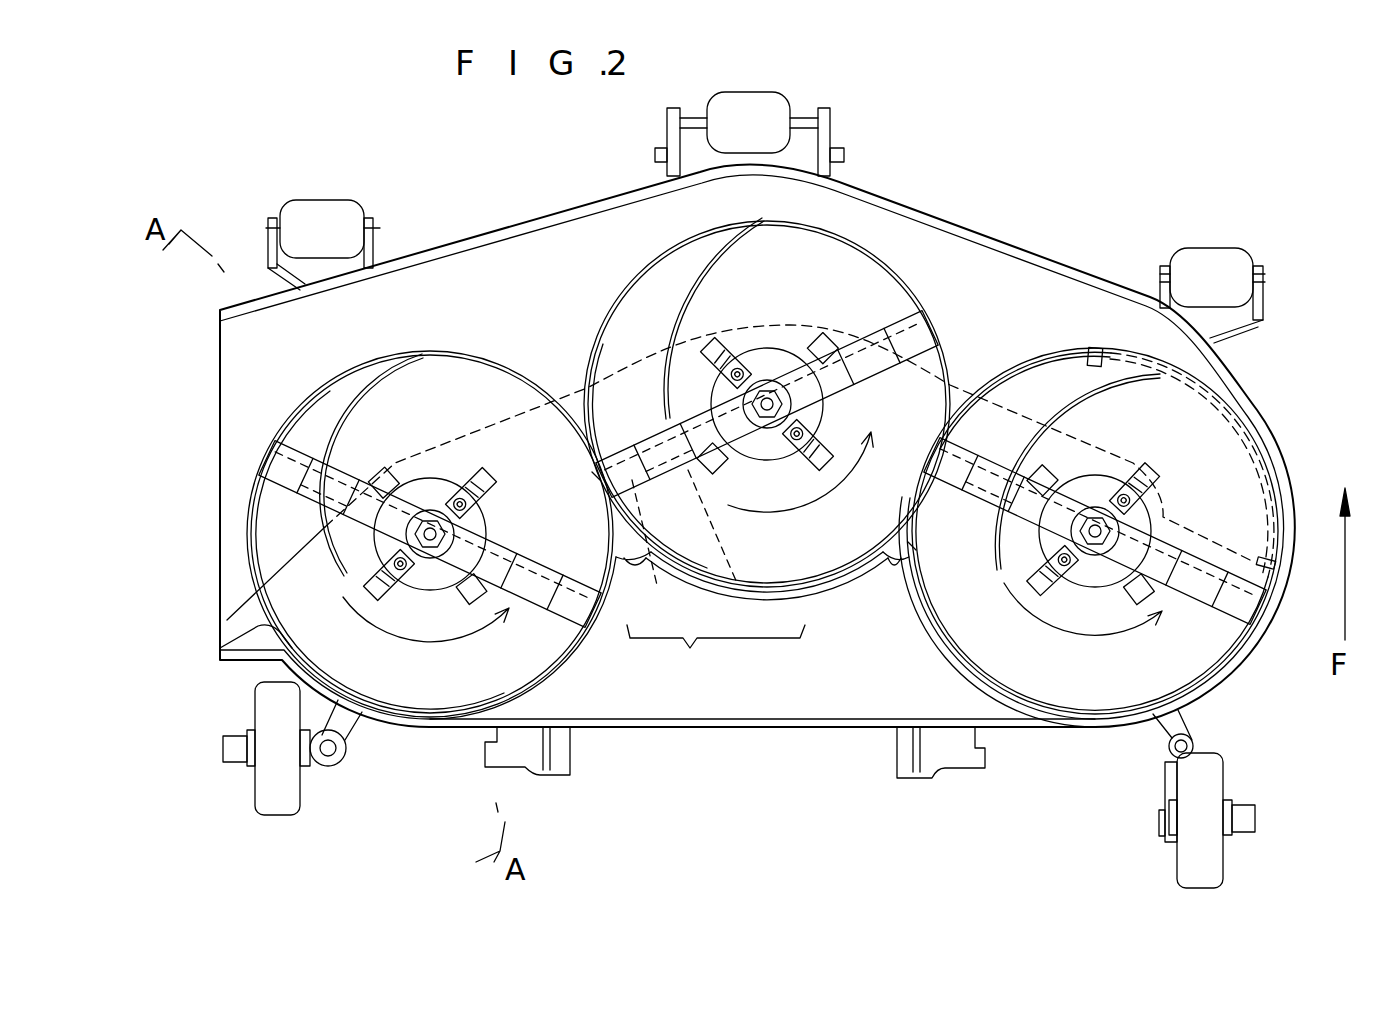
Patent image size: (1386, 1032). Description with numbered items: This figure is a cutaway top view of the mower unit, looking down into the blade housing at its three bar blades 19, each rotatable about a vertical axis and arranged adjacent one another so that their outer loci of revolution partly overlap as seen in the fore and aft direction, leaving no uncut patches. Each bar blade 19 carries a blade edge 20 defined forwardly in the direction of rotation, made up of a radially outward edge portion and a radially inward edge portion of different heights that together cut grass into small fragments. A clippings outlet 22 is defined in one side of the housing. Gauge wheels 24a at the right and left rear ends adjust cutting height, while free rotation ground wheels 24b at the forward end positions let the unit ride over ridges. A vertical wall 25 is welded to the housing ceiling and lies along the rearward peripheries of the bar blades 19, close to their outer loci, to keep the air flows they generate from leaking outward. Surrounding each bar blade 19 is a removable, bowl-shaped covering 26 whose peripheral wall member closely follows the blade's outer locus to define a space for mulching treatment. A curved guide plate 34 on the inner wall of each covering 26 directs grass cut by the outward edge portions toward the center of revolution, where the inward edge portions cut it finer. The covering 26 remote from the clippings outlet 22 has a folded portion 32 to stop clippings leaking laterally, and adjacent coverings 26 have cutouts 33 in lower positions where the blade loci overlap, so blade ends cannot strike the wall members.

The bar blade 19 is at (548, 560).
The blade edge 20 is at (787, 513).
The clippings outlet 22 is at (238, 425).
The gauge wheel 24a is at (265, 795).
The free rotation ground wheel 24b is at (328, 200).
The vertical wall 25 is at (942, 645).
The covering 26 is at (322, 378).
The folded portion 32 is at (1207, 390).
The cutout 33 is at (575, 456).
The curved guide plate 34 is at (350, 413).